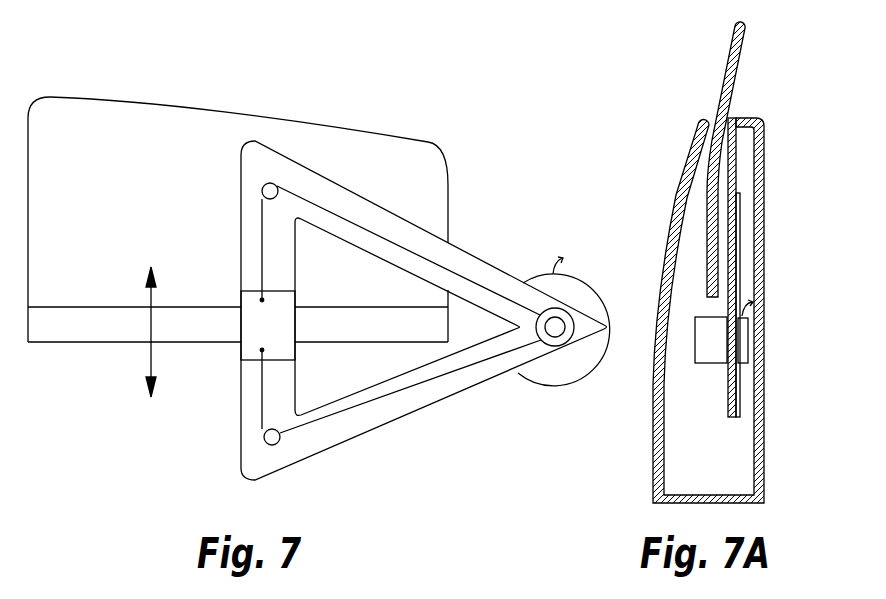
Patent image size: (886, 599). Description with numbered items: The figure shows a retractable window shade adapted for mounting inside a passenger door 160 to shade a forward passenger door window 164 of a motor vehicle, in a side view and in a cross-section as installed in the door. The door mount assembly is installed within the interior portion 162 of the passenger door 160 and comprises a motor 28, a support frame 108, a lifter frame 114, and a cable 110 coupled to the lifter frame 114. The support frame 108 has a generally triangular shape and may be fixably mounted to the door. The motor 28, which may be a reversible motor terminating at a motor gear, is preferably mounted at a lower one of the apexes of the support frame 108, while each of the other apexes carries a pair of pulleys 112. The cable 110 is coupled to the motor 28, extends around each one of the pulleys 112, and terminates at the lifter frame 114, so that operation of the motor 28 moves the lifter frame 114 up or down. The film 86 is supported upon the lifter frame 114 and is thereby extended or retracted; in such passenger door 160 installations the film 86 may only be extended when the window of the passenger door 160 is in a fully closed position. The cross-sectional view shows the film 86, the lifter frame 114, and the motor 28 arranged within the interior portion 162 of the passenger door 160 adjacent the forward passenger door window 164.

In FIG. 7, the motor 28 is at (562, 372).
In FIG. 7A, the motor 28 is at (748, 333).
In FIG. 7, the film 86 is at (105, 268).
In FIG. 7A, the film 86 is at (735, 119).
In FIG. 7, the support frame 108 is at (478, 259).
In FIG. 7, the cable 110 is at (382, 235).
In FIG. 7, the pulleys 112 is at (270, 185).
In FIG. 7, the lifter frame 114 is at (82, 330).
In FIG. 7A, the lifter frame 114 is at (737, 233).
In FIG. 7A, the passenger door 160 is at (653, 455).
In FIG. 7A, the interior portion 162 is at (722, 462).
In FIG. 7, the forward passenger door window 164 is at (148, 171).
In FIG. 7A, the forward passenger door window 164 is at (737, 31).